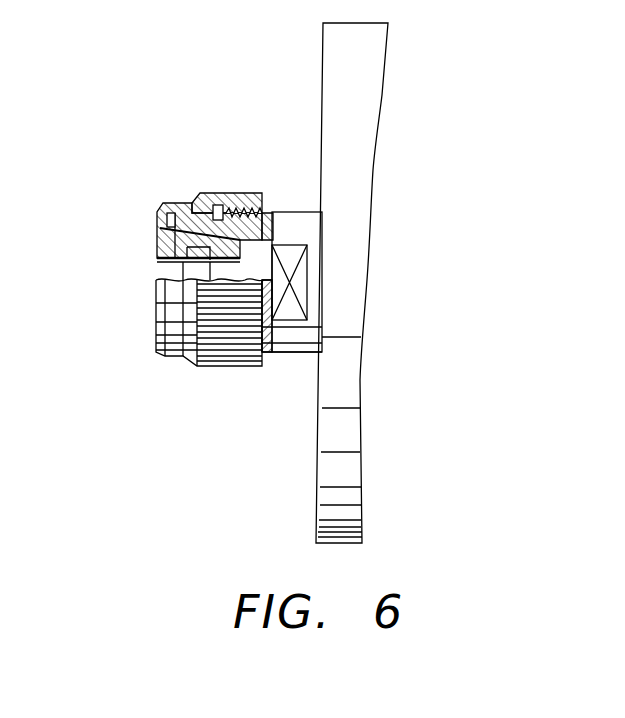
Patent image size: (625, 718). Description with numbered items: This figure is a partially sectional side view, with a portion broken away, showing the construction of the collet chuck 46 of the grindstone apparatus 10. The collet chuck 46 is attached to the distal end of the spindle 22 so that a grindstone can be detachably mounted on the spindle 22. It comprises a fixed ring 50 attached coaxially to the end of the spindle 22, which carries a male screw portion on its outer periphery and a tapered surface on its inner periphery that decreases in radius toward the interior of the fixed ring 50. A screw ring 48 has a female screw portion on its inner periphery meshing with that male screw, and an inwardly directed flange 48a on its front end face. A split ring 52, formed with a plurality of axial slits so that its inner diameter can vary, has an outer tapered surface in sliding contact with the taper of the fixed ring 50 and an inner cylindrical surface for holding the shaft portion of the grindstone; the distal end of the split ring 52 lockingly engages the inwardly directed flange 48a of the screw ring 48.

The grindstone apparatus 10 is at (320, 93).
The spindle 22 is at (287, 232).
The collet chuck 46 is at (210, 186).
The screw ring 48 is at (190, 198).
The inwardly directed flange 48a is at (158, 238).
The fixed ring 50 is at (248, 196).
The split ring 52 is at (157, 252).